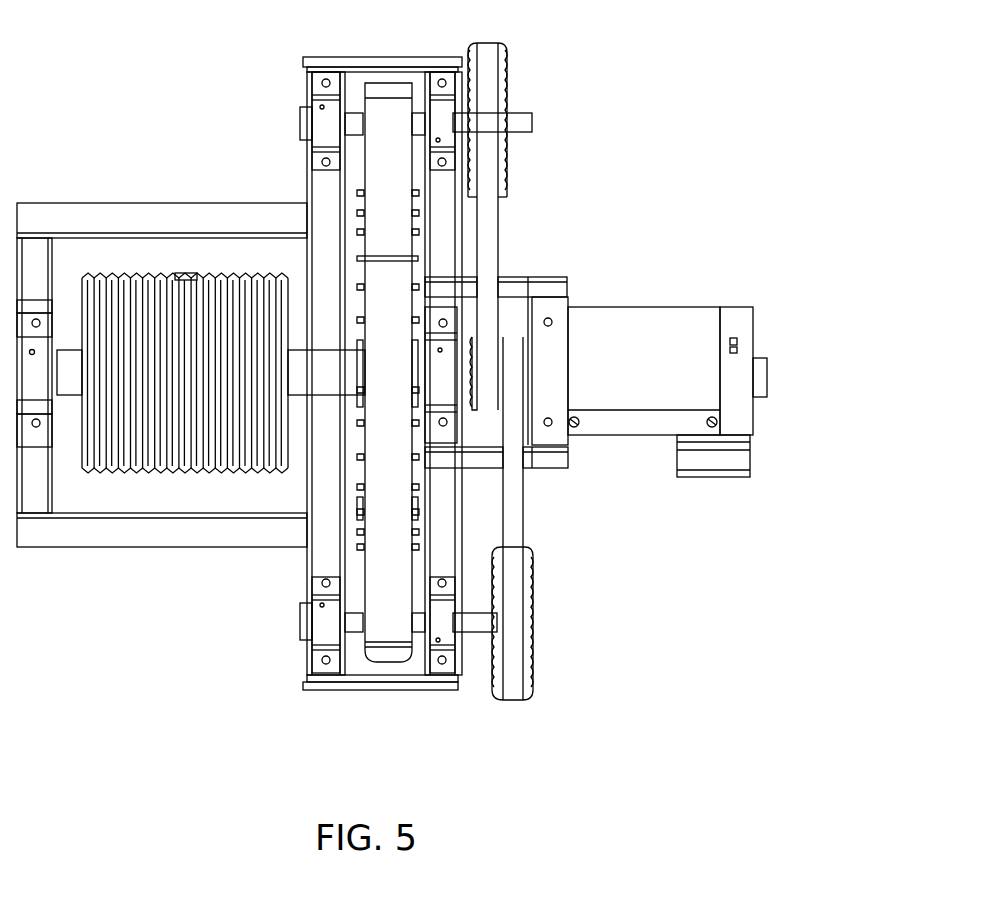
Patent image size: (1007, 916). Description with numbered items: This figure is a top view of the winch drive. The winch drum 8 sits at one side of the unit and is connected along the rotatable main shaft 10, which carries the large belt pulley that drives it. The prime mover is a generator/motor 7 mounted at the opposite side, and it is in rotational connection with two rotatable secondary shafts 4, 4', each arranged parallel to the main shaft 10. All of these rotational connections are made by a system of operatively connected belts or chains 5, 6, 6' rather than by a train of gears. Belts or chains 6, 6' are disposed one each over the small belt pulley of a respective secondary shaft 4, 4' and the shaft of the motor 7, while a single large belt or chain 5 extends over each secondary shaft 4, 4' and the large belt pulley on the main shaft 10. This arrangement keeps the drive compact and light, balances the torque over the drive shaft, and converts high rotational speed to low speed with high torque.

The secondary shaft 4 is at (564, 69).
The secondary shaft 4' is at (479, 697).
The single large belt or chain 5 is at (385, 222).
The belt or chain 6 is at (534, 226).
The belt or chain 6' is at (556, 518).
The generator/motor 7 is at (657, 337).
The winch drum 8 is at (145, 425).
The main shaft 10 is at (323, 377).